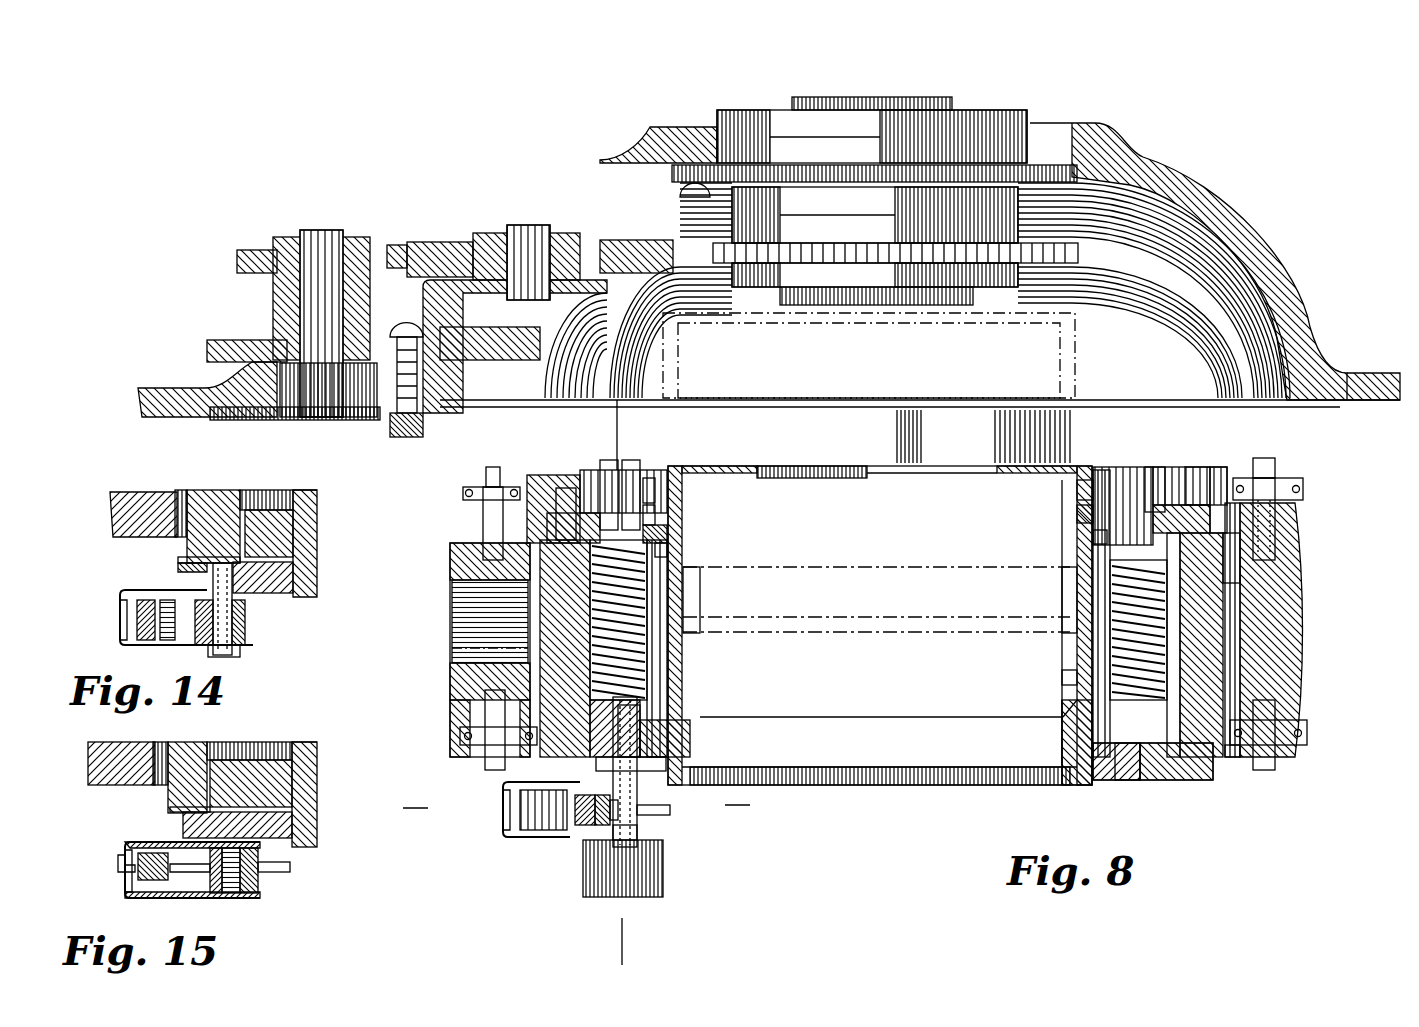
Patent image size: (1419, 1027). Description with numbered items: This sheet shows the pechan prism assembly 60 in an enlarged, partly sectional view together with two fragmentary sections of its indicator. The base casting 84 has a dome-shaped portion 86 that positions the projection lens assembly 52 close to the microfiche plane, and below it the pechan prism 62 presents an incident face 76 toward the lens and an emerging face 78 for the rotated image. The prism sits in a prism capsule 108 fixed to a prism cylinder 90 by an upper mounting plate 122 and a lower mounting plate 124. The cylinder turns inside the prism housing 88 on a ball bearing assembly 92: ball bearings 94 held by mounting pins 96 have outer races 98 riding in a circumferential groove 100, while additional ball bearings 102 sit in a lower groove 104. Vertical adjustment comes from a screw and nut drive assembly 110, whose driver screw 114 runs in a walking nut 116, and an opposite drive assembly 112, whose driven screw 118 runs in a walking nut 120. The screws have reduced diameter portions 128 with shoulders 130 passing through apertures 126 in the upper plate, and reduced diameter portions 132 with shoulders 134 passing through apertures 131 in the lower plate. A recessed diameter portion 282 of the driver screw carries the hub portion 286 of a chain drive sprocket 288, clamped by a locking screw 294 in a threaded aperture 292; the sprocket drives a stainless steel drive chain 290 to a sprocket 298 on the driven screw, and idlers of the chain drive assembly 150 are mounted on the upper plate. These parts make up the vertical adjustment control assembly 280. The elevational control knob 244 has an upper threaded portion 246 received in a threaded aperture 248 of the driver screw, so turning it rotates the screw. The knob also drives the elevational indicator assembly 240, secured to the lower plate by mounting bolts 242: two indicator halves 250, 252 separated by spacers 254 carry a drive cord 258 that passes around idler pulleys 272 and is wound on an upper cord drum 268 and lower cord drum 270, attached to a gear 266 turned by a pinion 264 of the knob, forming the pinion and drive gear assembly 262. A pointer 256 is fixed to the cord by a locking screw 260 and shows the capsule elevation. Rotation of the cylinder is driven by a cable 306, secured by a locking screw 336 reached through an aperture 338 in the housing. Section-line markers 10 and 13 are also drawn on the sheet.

In FIG. 8, the projection lens assembly 52 is at (915, 200).
In FIG. 8, the dome-shaped portion 86 is at (1178, 182).
In FIG. 8, the base casting 84 is at (1368, 375).
In FIG. 8, the incident face 76 is at (835, 466).
In FIG. 8, the emerging face 78 is at (932, 770).
In FIG. 8, the pechan prism 62 is at (897, 557).
In FIG. 14, the pechan prism 62 is at (315, 512).
In FIG. 15, the pechan prism 62 is at (313, 760).
In FIG. 8, the pechan prism assembly 60 is at (985, 843).
In FIG. 8, the vertical adjustment control assembly 280 is at (880, 835).
In FIG. 8, the aperture 338 is at (452, 578).
In FIG. 8, the locking screw 336 is at (528, 597).
In FIG. 8, the unthreaded reduced diameter portions 128 is at (548, 488).
In FIG. 8, the hub portion 286 is at (598, 490).
In FIG. 8, the locking screw 294 is at (609, 470).
In FIG. 8, the threaded aperture 292 is at (635, 470).
In FIG. 8, the recessed diameter portion 282 is at (647, 482).
In FIG. 8, the chain drive sprocket 288 is at (660, 515).
In FIG. 8, the ball bearing mounting pins 96 is at (483, 472).
In FIG. 8, the ball bearings 94 is at (465, 492).
In FIG. 8, the outer race 98 is at (463, 500).
In FIG. 8, the ball bearing assembly 92 is at (1330, 470).
In FIG. 8, the apertures 126 is at (657, 522).
In FIG. 8, the lower shoulder portion 130 is at (662, 545).
In FIG. 8, the screw and nut drive assembly 110 is at (646, 580).
In FIG. 8, the driver screw 114 is at (593, 600).
In FIG. 8, the walking nut 116 is at (662, 665).
In FIG. 14, the walking nut 116 is at (270, 492).
In FIG. 15, the walking nut 116 is at (262, 742).
In FIG. 8, the threaded aperture 248 is at (684, 700).
In FIG. 8, the shoulder portion 134 is at (657, 733).
In FIG. 8, the apertures 131 is at (648, 748).
In FIG. 8, the unthreaded reduced diameter portions 132 is at (642, 770).
In FIG. 8, the ball bearings 102 is at (462, 744).
In FIG. 8, the indicator half 252 is at (503, 784).
In FIG. 14, the indicator half 252 is at (120, 598).
In FIG. 15, the indicator half 252 is at (160, 842).
In FIG. 8, the indicator half 250 is at (510, 818).
In FIG. 14, the indicator half 250 is at (120, 640).
In FIG. 15, the indicator half 250 is at (125, 893).
In FIG. 8, the idler pulleys 272 is at (520, 828).
In FIG. 14, the idler pulleys 272 is at (140, 600).
In FIG. 8, the upper cord drum 268 is at (578, 800).
In FIG. 15, the upper cord drum 268 is at (248, 852).
In FIG. 8, the lower cord drum 270 is at (583, 827).
In FIG. 15, the lower cord drum 270 is at (250, 878).
In FIG. 8, the elevational indicator assembly 240 is at (486, 880).
In FIG. 14, the elevational indicator assembly 240 is at (83, 572).
In FIG. 15, the elevational indicator assembly 240 is at (225, 905).
In FIG. 8, the pinion 264 is at (583, 835).
In FIG. 8, the elevational control knob 244 is at (643, 892).
In FIG. 8, the upper threaded portion 246 is at (670, 808).
In FIG. 8, the gear 266 is at (653, 810).
In FIG. 15, the gear 266 is at (268, 872).
In FIG. 8, the pinion and drive gear assembly 262 is at (655, 828).
In FIG. 8, the section line 10 is at (600, 422).
In FIG. 8, the section line 13 is at (415, 783).
In FIG. 8, the stainless steel drive chain 290 is at (1102, 470).
In FIG. 8, the chain drive sprocket 298 is at (1153, 488).
In FIG. 8, the upper mounting plate 122 is at (1198, 515).
In FIG. 8, the circumferential groove 100 is at (1232, 478).
In FIG. 8, the chain drive assembly 150 is at (1078, 490).
In FIG. 8, the driven screw 118 is at (1110, 593).
In FIG. 8, the screw and nut drive assembly 112 is at (1113, 645).
In FIG. 8, the walking nut 120 is at (1075, 675).
In FIG. 8, the plastic coated stainless steel cable 306 is at (1262, 580).
In FIG. 8, the prism cylinder 90 is at (1210, 617).
In FIG. 14, the prism cylinder 90 is at (205, 492).
In FIG. 15, the prism cylinder 90 is at (190, 742).
In FIG. 8, the prism housing 88 is at (1300, 627).
In FIG. 14, the prism housing 88 is at (118, 492).
In FIG. 15, the prism housing 88 is at (108, 742).
In FIG. 8, the prism capsule 108 is at (1082, 778).
In FIG. 14, the prism capsule 108 is at (298, 490).
In FIG. 15, the prism capsule 108 is at (298, 742).
In FIG. 8, the lower mounting plate 124 is at (1210, 768).
In FIG. 14, the lower mounting plate 124 is at (290, 577).
In FIG. 15, the lower mounting plate 124 is at (290, 818).
In FIG. 8, the lower groove 104 is at (1235, 750).
In FIG. 14, the lower groove 104 is at (185, 555).
In FIG. 15, the lower groove 104 is at (170, 807).
In FIG. 14, the threaded mounting bolts 242 is at (232, 612).
In FIG. 14, the spacers 254 is at (245, 638).
In FIG. 14, the drive cord 258 is at (198, 602).
In FIG. 15, the locking screw 260 is at (138, 855).
In FIG. 15, the pointer 256 is at (118, 862).